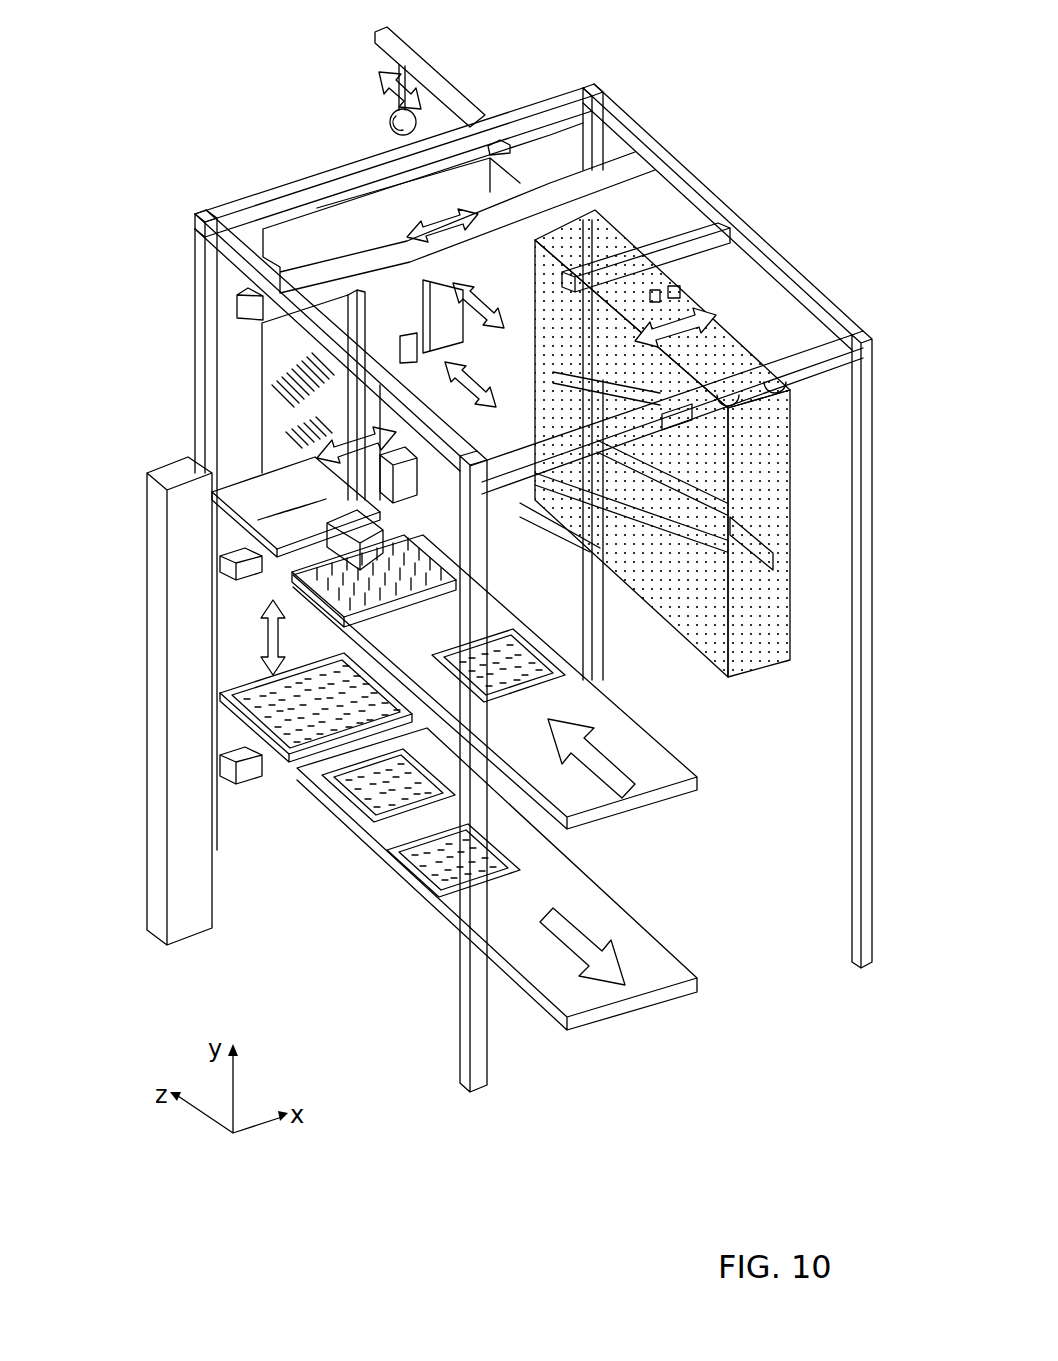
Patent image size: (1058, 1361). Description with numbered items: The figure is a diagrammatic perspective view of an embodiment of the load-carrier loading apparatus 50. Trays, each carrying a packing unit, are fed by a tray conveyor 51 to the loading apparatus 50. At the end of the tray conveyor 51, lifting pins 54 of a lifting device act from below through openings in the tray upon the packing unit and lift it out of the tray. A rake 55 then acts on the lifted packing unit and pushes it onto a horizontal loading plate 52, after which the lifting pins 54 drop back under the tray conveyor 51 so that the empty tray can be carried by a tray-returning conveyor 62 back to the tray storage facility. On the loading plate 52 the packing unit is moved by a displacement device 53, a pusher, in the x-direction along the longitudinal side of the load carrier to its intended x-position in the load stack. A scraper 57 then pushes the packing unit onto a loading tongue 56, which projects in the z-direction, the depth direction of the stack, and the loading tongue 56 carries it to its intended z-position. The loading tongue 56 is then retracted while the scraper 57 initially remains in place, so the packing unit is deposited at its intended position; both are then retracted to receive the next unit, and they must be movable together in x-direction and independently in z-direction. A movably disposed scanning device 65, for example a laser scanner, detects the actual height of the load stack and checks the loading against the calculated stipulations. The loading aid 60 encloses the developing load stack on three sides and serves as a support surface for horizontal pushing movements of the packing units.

The load-carrier loading apparatus 50 is at (98, 652).
The tray conveyor 51 is at (665, 767).
The loading plate 52 is at (253, 493).
The displacement device 53 is at (332, 262).
The lifting pins 54 is at (440, 566).
The rake 55 is at (295, 582).
The loading tongue 56 is at (687, 293).
The scraper 57 is at (680, 228).
The loading aid 60 is at (285, 352).
The tray-returning conveyor 62 is at (672, 970).
The scanning device 65 is at (370, 95).